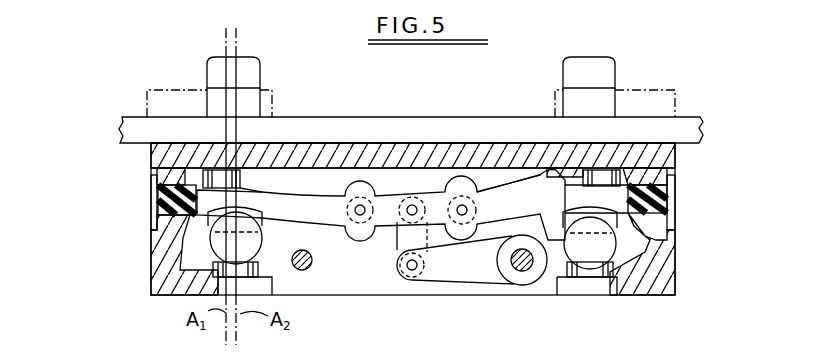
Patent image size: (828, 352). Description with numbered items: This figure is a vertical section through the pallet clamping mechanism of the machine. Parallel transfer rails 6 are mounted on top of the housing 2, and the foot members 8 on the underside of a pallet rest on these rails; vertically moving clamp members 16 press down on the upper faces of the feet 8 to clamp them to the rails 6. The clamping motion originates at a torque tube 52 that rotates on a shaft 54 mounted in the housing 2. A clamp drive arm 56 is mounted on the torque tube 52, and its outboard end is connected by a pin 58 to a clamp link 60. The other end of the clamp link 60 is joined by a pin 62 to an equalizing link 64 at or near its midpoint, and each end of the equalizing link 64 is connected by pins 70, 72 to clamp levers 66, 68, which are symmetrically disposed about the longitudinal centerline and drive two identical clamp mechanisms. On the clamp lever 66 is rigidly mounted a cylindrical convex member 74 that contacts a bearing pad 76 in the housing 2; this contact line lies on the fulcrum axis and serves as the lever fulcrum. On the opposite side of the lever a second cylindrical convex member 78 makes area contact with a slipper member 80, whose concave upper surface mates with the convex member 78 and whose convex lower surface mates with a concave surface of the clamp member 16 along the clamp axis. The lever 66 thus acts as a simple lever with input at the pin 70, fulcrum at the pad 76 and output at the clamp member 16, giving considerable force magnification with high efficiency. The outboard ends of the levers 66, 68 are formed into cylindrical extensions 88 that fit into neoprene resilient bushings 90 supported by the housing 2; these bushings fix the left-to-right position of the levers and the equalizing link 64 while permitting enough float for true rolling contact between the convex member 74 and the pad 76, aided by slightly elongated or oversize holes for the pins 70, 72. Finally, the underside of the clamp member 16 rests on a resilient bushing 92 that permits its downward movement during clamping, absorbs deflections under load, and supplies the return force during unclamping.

The housing 2 is at (675, 270).
The transfer rail 6 is at (429, 117).
The foot member 8 is at (272, 90).
The clamp member 16 is at (260, 68).
The torque tube 52 is at (530, 285).
The shaft 54 is at (518, 273).
The clamp drive arm 56 is at (455, 260).
The pin 58 is at (400, 273).
The clamp link 60 is at (397, 242).
The pin 62 is at (415, 200).
The equalizing link 64 is at (452, 196).
The clamp lever 66 is at (327, 228).
The clamp lever 68 is at (520, 190).
The pin 70 is at (345, 210).
The pin 72 is at (464, 220).
The cylindrical convex member 74 is at (262, 186).
The bearing pad 76 is at (217, 172).
The second cylindrical convex member 78 is at (265, 217).
The slipper member 80 is at (210, 218).
The cylindrical extension 88 is at (187, 185).
The resilient bushing 90 is at (162, 206).
The resilient bushing 92 is at (262, 262).